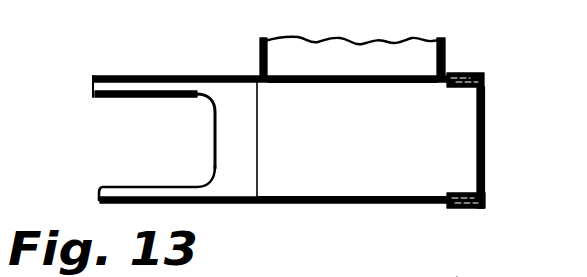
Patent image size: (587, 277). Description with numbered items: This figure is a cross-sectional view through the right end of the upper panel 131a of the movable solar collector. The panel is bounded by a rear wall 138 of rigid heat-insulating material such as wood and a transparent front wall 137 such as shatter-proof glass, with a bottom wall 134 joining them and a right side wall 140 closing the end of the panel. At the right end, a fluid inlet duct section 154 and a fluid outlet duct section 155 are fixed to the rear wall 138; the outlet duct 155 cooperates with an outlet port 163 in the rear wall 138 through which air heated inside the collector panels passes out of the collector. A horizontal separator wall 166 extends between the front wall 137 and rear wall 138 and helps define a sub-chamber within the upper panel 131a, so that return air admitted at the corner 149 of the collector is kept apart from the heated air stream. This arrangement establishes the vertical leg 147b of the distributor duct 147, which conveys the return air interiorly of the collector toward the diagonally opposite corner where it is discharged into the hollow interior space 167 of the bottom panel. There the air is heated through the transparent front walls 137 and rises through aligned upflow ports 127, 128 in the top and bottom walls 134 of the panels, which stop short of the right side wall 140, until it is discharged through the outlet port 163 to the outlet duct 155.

The rear wall 138 is at (181, 50).
The upflow port 127 is at (127, 99).
The upflow port 128 is at (205, 131).
The hollow interior space 167 is at (152, 152).
The front wall 137 is at (138, 204).
The bottom wall 134 is at (225, 191).
The outlet port 163 is at (350, 78).
The horizontal separator wall 166 is at (352, 167).
The fluid outlet duct section 155 is at (384, 56).
The corner 149 is at (486, 63).
The right side wall 140 is at (488, 143).
The upper panel 131a is at (492, 113).
The distributor duct 147 is at (452, 180).
The vertical leg 147b is at (402, 188).
The fluid inlet duct section 154 is at (457, 276).